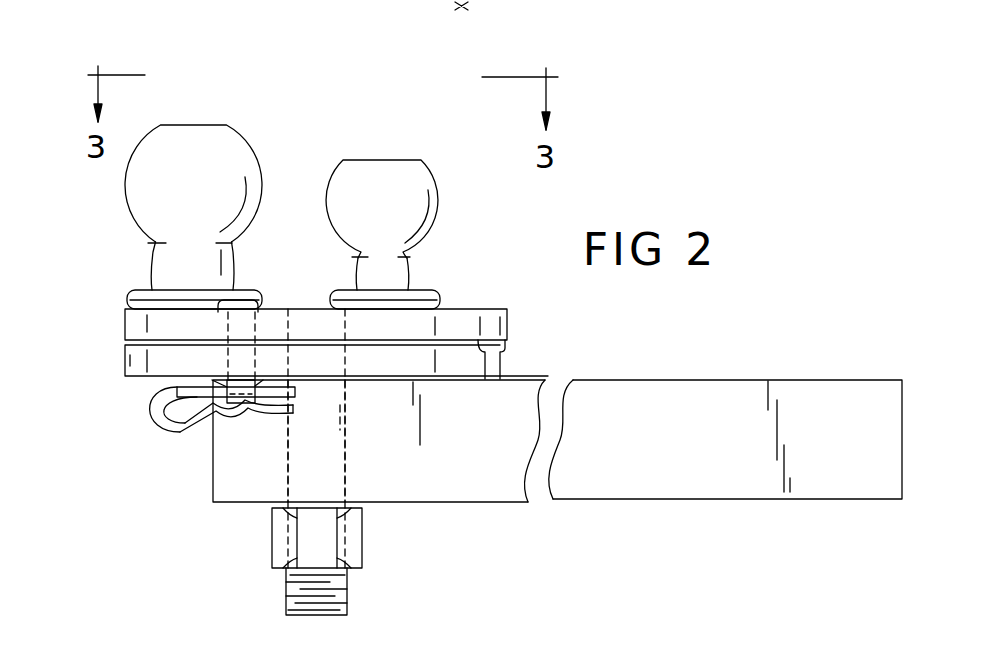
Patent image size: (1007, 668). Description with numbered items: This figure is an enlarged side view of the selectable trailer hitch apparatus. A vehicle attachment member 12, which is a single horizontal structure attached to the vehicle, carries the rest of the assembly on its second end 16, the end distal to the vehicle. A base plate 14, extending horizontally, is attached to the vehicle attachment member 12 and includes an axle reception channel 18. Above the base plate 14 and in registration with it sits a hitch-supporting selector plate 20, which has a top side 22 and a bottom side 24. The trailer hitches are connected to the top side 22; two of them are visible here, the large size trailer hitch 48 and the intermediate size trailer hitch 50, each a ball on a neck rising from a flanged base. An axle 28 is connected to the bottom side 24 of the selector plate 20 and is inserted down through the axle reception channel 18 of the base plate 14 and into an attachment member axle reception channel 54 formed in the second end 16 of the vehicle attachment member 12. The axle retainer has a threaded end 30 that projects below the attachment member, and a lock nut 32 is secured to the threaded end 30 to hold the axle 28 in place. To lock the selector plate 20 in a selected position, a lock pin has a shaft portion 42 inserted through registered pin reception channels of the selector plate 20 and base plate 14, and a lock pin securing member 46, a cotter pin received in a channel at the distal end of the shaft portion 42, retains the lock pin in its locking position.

The vehicle attachment member 12 is at (675, 407).
The base plate 14 is at (127, 358).
The second end 16 is at (225, 440).
The axle reception channel 18 is at (288, 309).
The hitch-supporting selector plate 20 is at (138, 317).
The top side 22 is at (487, 308).
The bottom side 24 is at (505, 343).
The axle 28 is at (303, 458).
The threaded end 30 is at (343, 598).
The lock nut 32 is at (357, 538).
The shaft portion 42 is at (237, 342).
The lock pin securing member 46 is at (157, 412).
The large size trailer hitch 48 is at (205, 166).
The intermediate size trailer hitch 50 is at (397, 192).
The attachment member axle reception channel 54 is at (345, 402).